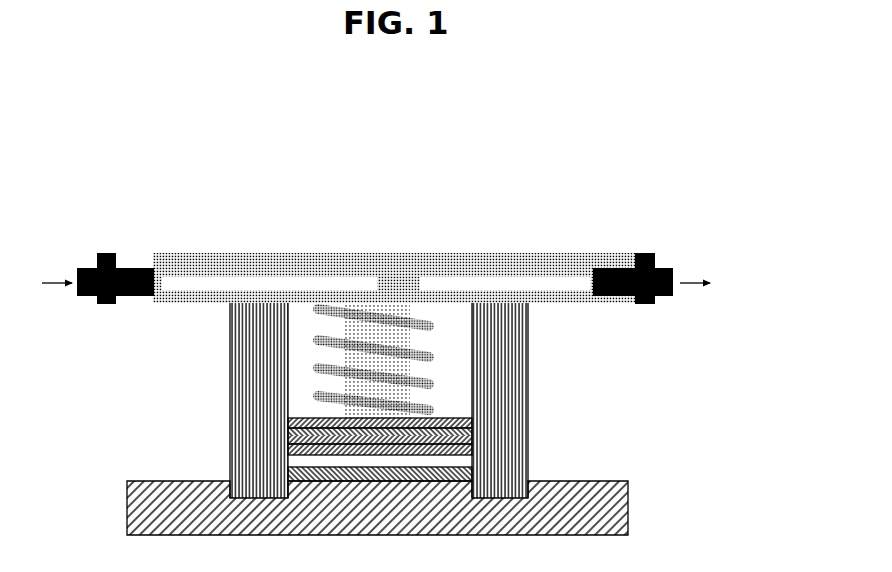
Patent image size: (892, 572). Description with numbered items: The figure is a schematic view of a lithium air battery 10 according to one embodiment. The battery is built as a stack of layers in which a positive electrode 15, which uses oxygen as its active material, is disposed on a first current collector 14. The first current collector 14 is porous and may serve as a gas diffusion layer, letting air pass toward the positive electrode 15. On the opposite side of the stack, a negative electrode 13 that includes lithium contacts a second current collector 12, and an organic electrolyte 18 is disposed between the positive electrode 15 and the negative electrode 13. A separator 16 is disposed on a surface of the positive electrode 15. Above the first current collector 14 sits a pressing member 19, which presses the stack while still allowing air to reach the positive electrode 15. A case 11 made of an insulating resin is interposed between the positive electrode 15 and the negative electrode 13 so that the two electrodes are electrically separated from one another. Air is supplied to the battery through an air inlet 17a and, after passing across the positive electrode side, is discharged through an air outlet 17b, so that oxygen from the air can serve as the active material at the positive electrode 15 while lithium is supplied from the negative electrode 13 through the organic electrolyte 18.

The lithium air battery 10 is at (83, 182).
The case 11 is at (232, 353).
The second current collector 12 is at (172, 480).
The negative electrode 13 is at (470, 470).
The first current collector 14 is at (470, 418).
The positive electrode 15 is at (470, 432).
The separator 16 is at (288, 445).
The air inlet 17a is at (87, 295).
The air outlet 17b is at (658, 297).
The organic electrolyte 18 is at (292, 460).
The pressing member 19 is at (436, 355).